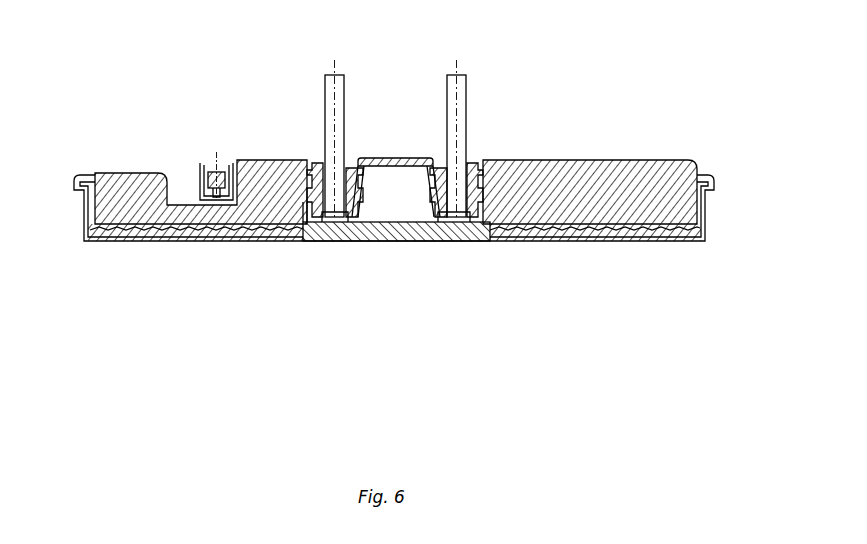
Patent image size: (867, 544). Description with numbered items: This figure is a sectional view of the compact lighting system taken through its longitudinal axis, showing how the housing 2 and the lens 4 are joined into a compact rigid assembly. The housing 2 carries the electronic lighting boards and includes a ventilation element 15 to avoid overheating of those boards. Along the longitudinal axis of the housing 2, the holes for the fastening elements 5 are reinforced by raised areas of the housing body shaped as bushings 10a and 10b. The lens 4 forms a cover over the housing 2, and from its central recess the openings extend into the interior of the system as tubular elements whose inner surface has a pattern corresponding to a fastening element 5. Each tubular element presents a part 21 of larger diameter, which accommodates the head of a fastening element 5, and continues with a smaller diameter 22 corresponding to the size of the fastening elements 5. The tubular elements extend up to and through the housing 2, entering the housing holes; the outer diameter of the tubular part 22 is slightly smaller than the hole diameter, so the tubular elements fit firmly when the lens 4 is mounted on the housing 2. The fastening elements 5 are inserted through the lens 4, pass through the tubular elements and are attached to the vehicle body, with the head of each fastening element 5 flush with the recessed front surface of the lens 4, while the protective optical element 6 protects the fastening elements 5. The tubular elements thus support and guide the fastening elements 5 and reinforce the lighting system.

The housing 2 is at (623, 183).
The lens 4 is at (678, 232).
The fastening elements 5 is at (337, 102).
The protective optical element 6 is at (428, 235).
The bushing 10a is at (365, 172).
The bushing 10b is at (428, 172).
The ventilation element 15 is at (197, 192).
The larger diameter part 21 is at (320, 188).
The smaller diameter tubular part 22 is at (300, 207).